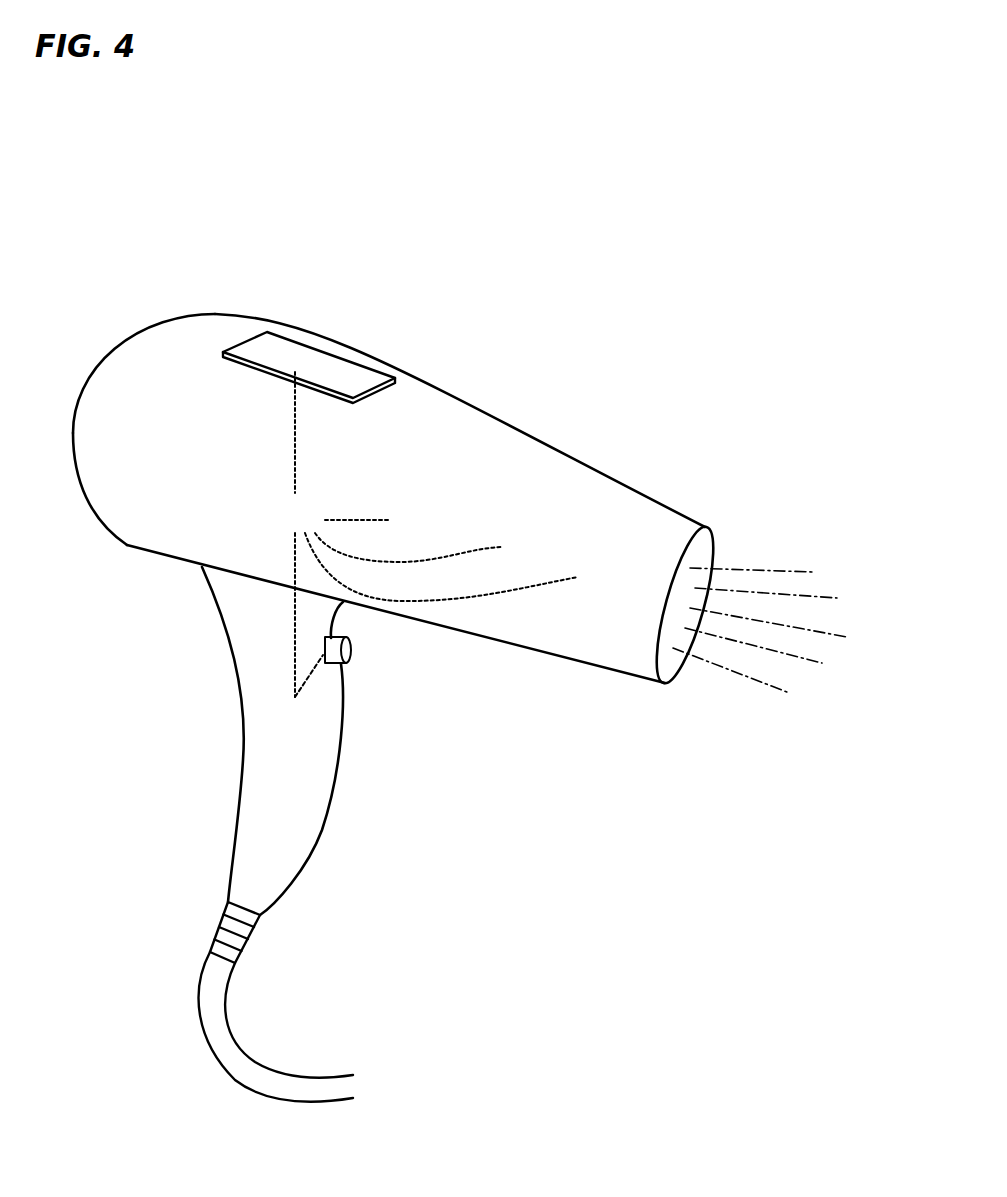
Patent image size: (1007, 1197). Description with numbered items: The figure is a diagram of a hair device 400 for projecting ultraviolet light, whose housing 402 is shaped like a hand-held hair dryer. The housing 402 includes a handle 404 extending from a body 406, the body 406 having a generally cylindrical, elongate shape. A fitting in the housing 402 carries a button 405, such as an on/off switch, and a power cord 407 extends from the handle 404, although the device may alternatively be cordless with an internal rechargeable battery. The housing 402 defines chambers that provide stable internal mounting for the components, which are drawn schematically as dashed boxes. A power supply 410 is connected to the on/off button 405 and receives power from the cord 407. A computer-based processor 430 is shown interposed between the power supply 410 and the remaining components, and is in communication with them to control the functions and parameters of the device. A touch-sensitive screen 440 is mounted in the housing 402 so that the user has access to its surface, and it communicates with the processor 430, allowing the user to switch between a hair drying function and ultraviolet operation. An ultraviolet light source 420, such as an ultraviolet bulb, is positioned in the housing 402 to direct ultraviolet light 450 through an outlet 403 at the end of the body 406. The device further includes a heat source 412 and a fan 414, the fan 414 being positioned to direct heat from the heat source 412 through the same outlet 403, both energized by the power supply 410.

The hair device 400 is at (657, 352).
The housing 402 is at (153, 538).
The outlet 403 is at (705, 548).
The handle 404 is at (302, 817).
The button 405 is at (351, 650).
The body 406 is at (460, 423).
The power cord 407 is at (218, 1033).
The power supply 410 is at (292, 696).
The heat source 412 is at (471, 567).
The fan 414 is at (438, 547).
The ultraviolet light source 420 is at (387, 522).
The computer-based processor 430 is at (295, 534).
The touch-sensitive screen 440 is at (309, 367).
The ultraviolet light 450 is at (762, 568).